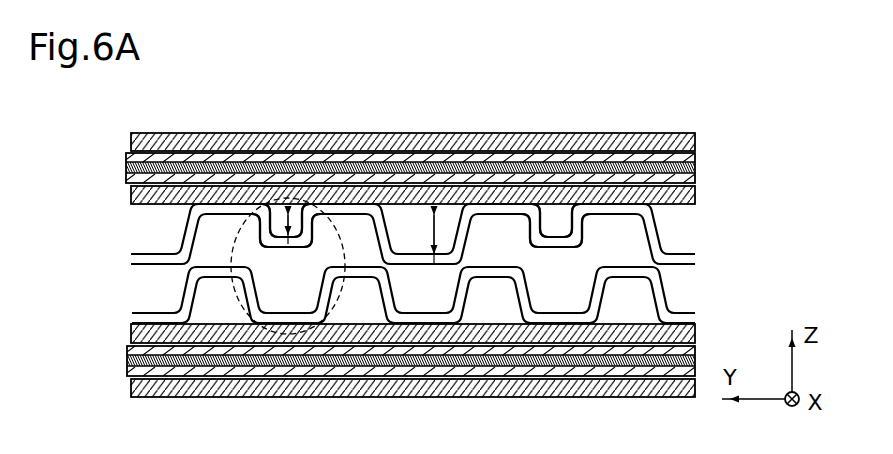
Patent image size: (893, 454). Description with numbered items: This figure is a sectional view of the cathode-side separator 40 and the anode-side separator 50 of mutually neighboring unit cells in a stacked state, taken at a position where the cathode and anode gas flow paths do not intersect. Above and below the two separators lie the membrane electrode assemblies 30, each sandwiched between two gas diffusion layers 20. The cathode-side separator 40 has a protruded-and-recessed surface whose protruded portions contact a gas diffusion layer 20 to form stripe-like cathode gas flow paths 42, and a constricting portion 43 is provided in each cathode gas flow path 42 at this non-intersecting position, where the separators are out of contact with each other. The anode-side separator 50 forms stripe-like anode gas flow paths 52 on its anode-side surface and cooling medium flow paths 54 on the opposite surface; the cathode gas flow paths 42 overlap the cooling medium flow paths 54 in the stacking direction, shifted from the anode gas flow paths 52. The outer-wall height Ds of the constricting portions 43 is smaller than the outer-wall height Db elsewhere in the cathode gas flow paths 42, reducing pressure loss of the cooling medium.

The gas diffusion layer 20 is at (131, 142).
The membrane electrode assembly 30 is at (126, 178).
The cathode-side separator 40 is at (131, 259).
The cathode gas flow path 42 is at (140, 244).
The constricting portion 43 is at (301, 224).
The anode-side separator 50 is at (132, 318).
The anode gas flow path 52 is at (640, 309).
The cooling medium flow path 54 is at (570, 309).